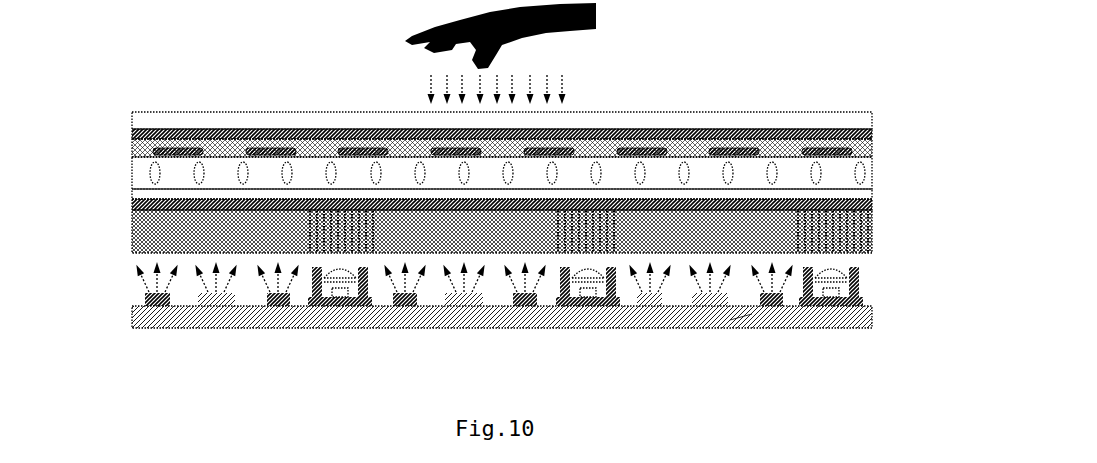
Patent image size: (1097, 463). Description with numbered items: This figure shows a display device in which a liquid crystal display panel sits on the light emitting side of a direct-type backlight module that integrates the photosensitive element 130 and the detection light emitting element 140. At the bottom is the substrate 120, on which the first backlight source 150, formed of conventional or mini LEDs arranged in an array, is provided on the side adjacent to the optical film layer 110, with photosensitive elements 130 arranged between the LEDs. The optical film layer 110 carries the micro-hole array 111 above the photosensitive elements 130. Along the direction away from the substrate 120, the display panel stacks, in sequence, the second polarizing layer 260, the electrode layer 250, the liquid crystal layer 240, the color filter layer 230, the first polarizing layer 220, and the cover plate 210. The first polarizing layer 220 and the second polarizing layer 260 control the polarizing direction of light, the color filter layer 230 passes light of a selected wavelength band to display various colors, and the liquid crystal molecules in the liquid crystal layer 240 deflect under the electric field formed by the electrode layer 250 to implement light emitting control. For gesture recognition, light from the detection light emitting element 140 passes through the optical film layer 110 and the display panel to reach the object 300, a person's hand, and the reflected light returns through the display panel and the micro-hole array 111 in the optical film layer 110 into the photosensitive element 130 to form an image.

The object 300 is at (597, 14).
The cover plate 210 is at (874, 122).
The first polarizing layer 220 is at (130, 134).
The color filter layer 230 is at (874, 148).
The liquid crystal layer 240 is at (130, 174).
The electrode layer 250 is at (874, 194).
The second polarizing layer 260 is at (130, 205).
The optical film layer 110 is at (130, 230).
The micro-hole array 111 is at (340, 230).
The substrate 120 is at (130, 318).
The photosensitive element 130 is at (335, 318).
The detection light emitting element 140 is at (216, 307).
The first backlight source 150 is at (752, 314).